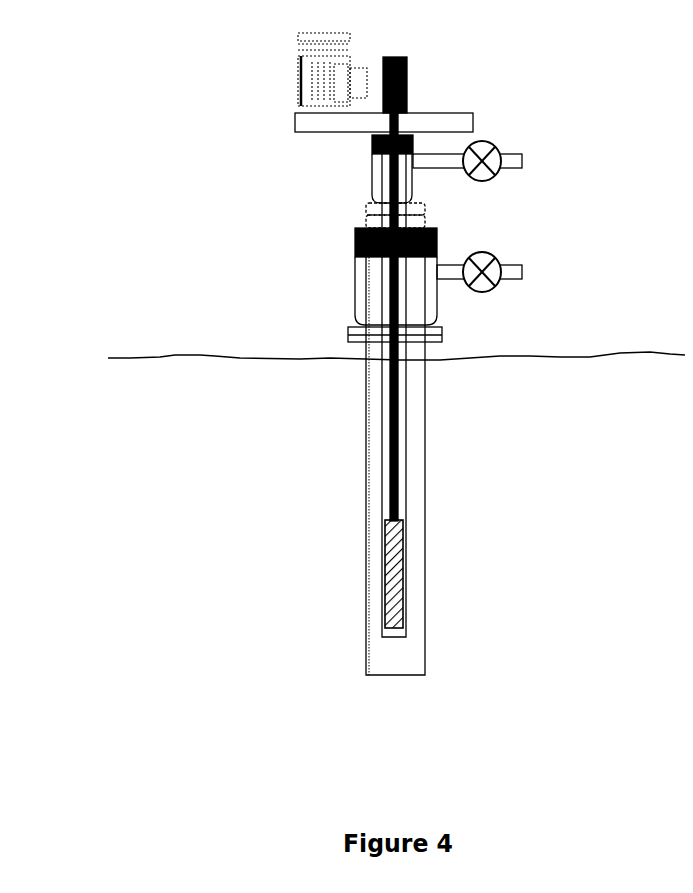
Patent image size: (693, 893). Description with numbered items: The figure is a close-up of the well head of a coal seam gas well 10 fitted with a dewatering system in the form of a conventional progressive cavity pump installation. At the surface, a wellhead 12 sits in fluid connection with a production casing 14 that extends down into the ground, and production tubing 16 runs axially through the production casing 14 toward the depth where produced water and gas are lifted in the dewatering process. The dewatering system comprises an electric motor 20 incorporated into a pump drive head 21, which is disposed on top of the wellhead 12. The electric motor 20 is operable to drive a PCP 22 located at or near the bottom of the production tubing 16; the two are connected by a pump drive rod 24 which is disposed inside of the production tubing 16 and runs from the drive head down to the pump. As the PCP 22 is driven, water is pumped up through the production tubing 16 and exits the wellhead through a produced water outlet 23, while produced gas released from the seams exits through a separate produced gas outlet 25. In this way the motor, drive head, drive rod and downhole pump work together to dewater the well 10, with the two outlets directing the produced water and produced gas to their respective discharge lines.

The CSG well 10 is at (351, 366).
The wellhead 12 is at (341, 249).
The production casing 14 is at (353, 428).
The production tubing 16 is at (368, 473).
The electric motor 20 is at (278, 53).
The pump drive head 21 is at (440, 110).
The PCP 22 is at (376, 520).
The produced water outlet 23 is at (538, 150).
The pump drive rod 24 is at (409, 445).
The produced gas outlet 25 is at (537, 260).